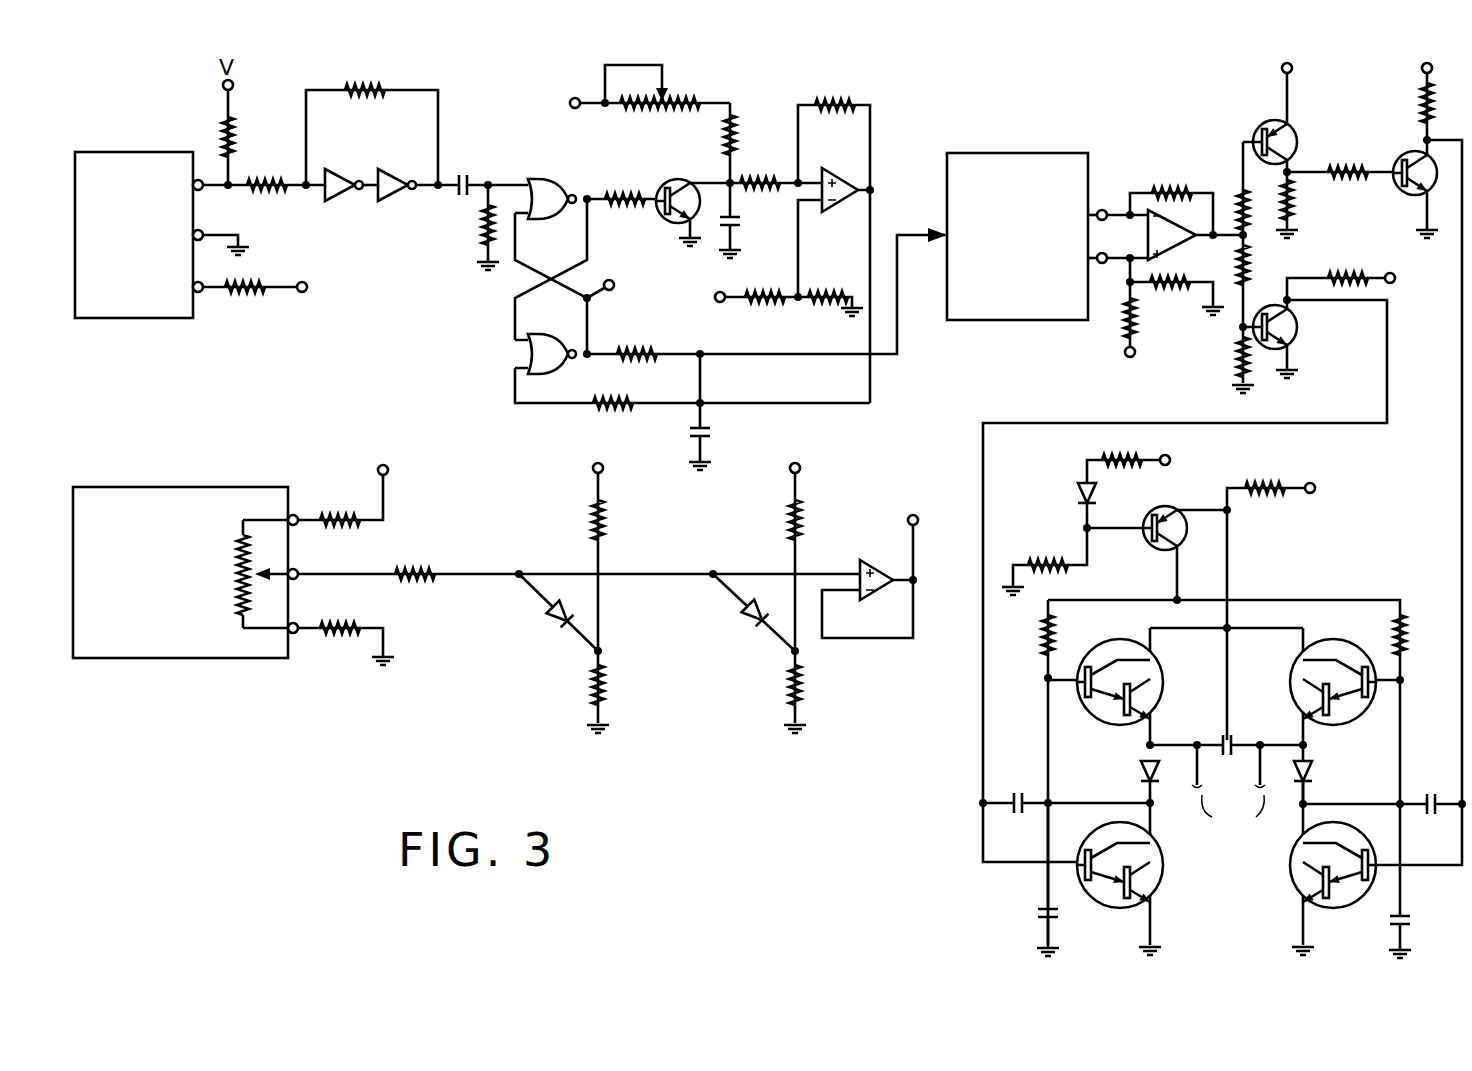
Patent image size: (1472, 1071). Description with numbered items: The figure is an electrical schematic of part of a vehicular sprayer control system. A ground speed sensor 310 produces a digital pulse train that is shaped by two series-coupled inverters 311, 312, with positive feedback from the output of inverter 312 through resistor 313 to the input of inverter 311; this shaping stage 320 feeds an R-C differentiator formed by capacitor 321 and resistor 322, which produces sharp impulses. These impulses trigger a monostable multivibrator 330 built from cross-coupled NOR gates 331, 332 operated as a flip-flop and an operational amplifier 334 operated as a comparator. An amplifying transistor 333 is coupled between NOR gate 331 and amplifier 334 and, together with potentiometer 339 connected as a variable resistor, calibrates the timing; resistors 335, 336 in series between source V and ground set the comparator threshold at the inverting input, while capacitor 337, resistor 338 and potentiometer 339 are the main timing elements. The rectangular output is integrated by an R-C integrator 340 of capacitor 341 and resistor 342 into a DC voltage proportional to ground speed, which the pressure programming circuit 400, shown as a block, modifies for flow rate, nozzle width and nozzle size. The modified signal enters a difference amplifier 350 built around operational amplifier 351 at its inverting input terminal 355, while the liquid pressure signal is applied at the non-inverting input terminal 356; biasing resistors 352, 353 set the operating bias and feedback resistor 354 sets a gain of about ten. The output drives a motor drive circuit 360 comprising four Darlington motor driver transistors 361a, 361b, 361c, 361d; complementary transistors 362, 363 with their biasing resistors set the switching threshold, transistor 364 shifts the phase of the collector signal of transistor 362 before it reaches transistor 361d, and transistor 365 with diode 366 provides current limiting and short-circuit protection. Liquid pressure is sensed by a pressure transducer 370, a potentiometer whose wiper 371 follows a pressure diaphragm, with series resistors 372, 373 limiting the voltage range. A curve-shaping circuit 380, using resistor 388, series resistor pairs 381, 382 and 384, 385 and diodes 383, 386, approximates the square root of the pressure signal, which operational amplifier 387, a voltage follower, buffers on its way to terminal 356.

The ground speed sensor 310 is at (118, 318).
The inverter 311 is at (343, 197).
The inverter 312 is at (398, 197).
The resistor 313 is at (380, 82).
The differentiator circuit 320 is at (417, 195).
The capacitor 321 is at (465, 172).
The resistor 322 is at (483, 232).
The monostable multivibrator 330 is at (563, 316).
The NOR gate 331 is at (560, 216).
The NOR gate 332 is at (572, 312).
The amplifying transistor 333 is at (689, 178).
The operational amplifier 334 is at (833, 173).
The resistor 335 is at (772, 302).
The resistor 336 is at (838, 280).
The capacitor 337 is at (742, 218).
The resistor 338 is at (738, 130).
The potentiometer 339 is at (668, 92).
The R-C integrator circuit 340 is at (731, 349).
The capacitor 341 is at (687, 433).
The resistor 342 is at (644, 361).
The difference amplifier 350 is at (1160, 238).
The operational amplifier 351 is at (1180, 247).
The biasing resistor 352 is at (1140, 321).
The biasing resistor 353 is at (1175, 286).
The feedback resistor 354 is at (1176, 190).
The inverting input terminal 355 is at (1104, 209).
The non-inverting input terminal 356 is at (1103, 265).
The motor drive circuit 360 is at (1154, 703).
The motor driver transistor 361a is at (1163, 658).
The motor driver transistor 361b is at (1290, 696).
The motor driver transistor 361c is at (1104, 908).
The motor driver transistor 361d is at (1340, 913).
The complementary transistor 362 is at (1296, 130).
The complementary transistor 363 is at (1298, 339).
The transistor 364 is at (1405, 197).
The transistor 365 is at (1160, 510).
The diode 366 is at (1078, 496).
The pressure transducer 370 is at (213, 594).
The wiper 371 is at (277, 571).
The resistor 372 is at (356, 514).
The resistor 373 is at (358, 623).
The curve-shaping circuit 380 is at (686, 593).
The resistor 381 is at (608, 522).
The resistor 382 is at (608, 686).
The diode 383 is at (549, 614).
The resistor 384 is at (804, 522).
The resistor 385 is at (808, 686).
The diode 386 is at (746, 614).
The operational amplifier 387 is at (877, 588).
The resistor 388 is at (422, 560).
The pressure programming circuit 400 is at (1005, 320).